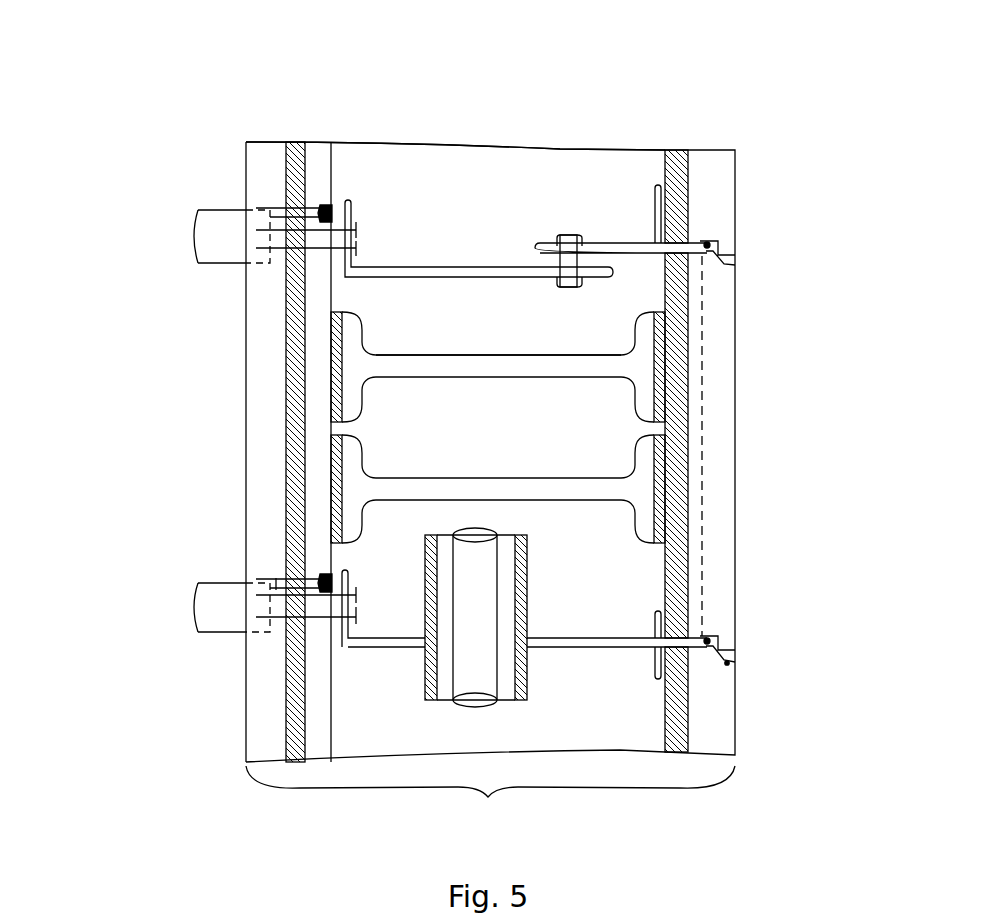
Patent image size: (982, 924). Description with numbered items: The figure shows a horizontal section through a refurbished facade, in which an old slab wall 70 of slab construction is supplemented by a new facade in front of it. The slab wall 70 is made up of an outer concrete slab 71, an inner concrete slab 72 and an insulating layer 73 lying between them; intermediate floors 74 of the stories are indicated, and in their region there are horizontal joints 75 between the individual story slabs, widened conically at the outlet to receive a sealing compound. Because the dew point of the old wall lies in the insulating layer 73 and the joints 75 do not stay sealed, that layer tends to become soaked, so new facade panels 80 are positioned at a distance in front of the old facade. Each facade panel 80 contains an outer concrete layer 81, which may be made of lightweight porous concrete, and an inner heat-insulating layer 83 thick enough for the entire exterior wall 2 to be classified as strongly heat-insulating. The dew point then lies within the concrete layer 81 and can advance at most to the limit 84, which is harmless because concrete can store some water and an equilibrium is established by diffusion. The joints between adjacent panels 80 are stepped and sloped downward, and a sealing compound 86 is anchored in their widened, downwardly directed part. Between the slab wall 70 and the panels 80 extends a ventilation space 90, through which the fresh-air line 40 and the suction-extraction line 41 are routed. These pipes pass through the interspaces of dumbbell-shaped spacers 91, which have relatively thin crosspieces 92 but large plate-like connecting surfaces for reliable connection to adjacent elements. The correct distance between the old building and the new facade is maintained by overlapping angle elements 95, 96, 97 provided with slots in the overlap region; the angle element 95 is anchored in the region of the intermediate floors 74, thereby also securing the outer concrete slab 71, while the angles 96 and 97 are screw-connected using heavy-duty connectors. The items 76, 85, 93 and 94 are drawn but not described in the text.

The exterior wall 2 is at (490, 798).
The fresh-air line 40 is at (520, 572).
The suction-extraction line 41 is at (478, 638).
The slab wall 70 is at (330, 168).
The outer concrete slab 71 is at (318, 730).
The inner concrete slab 72 is at (265, 645).
The insulating layer 73 is at (294, 702).
The intermediate floor 74 is at (236, 251).
The joint 75 is at (276, 583).
The upper bolt 76 is at (326, 212).
The facade panel 80 is at (735, 163).
The outer concrete layer 81 is at (712, 168).
The inner heat-insulating layer 83 is at (676, 217).
The maximum limit of dew point 84 is at (700, 498).
The flange bracket 85 is at (707, 243).
The sealing compound 86 is at (727, 663).
The ventilation space 90 is at (560, 149).
The dumbbell-shaped spacer 91 is at (368, 353).
The crosspiece 92 is at (463, 366).
The lower panel 93 is at (350, 467).
The hatched filler strip 94 is at (337, 343).
The angle element 95 is at (349, 241).
The angle element 96 is at (655, 240).
The angle element 97 is at (655, 258).